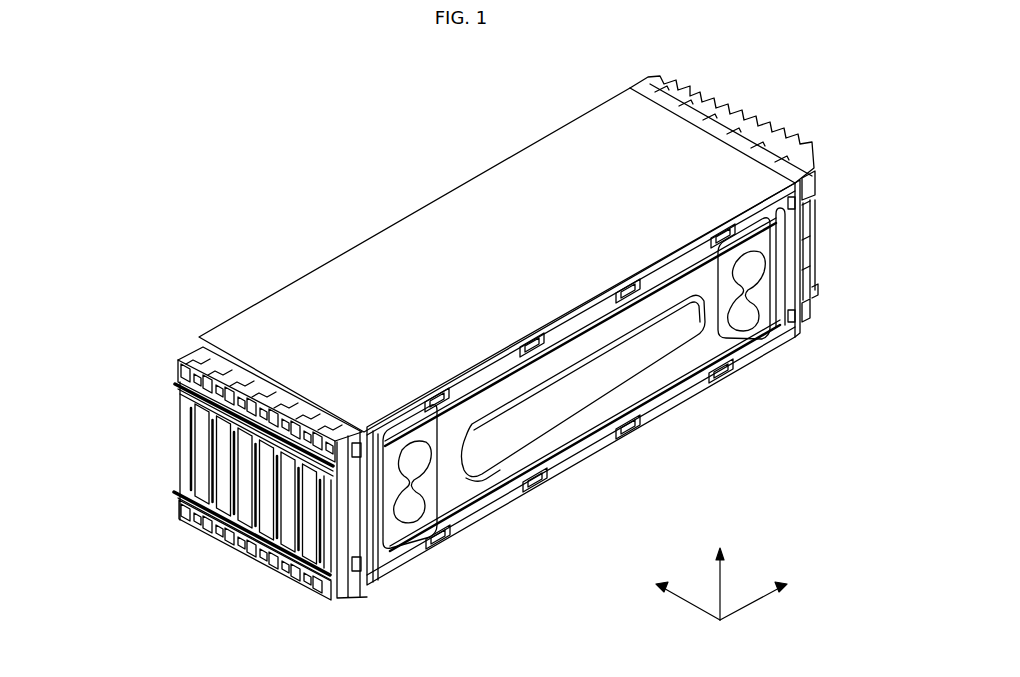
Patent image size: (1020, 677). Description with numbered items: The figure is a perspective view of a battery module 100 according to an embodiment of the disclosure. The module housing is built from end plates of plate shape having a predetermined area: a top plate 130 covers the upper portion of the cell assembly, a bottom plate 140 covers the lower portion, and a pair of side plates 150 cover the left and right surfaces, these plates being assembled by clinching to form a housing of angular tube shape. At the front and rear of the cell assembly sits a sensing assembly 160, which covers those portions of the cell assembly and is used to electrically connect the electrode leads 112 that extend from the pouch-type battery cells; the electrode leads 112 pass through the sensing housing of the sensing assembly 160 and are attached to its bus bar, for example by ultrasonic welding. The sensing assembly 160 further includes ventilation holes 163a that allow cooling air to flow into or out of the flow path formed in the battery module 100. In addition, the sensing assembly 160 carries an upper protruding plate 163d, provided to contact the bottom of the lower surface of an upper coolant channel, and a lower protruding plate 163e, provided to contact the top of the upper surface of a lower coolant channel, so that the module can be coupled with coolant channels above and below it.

The battery module 100 is at (276, 92).
The electrode lead 112 is at (242, 478).
The top plate 130 is at (488, 187).
The bottom plate 140 is at (676, 398).
The side plate 150 is at (460, 492).
The sensing assembly 160 is at (738, 104).
The ventilation hole 163a is at (180, 357).
The upper protruding plate 163d is at (186, 383).
The lower protruding plate 163e is at (322, 566).